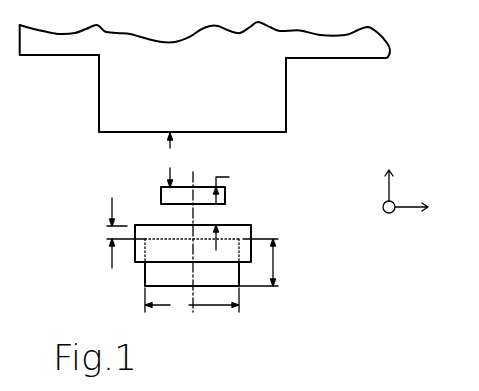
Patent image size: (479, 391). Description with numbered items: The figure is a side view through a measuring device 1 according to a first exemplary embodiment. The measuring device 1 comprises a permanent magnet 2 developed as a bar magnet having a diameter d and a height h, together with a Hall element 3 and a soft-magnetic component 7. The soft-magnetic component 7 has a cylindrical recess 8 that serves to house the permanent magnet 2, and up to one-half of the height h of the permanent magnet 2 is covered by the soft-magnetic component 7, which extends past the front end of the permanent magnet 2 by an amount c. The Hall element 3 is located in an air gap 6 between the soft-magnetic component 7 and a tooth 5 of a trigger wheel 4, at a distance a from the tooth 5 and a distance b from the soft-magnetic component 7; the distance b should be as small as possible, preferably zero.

The measuring device 1 is at (69, 210).
The permanent magnet 2 is at (152, 273).
The Hall element 3 is at (204, 187).
The trigger wheel 4 is at (310, 52).
The tooth 5 is at (277, 116).
The air gap 6 is at (153, 158).
The soft-magnetic component 7 is at (244, 232).
The cylindrical recess 8 is at (230, 239).